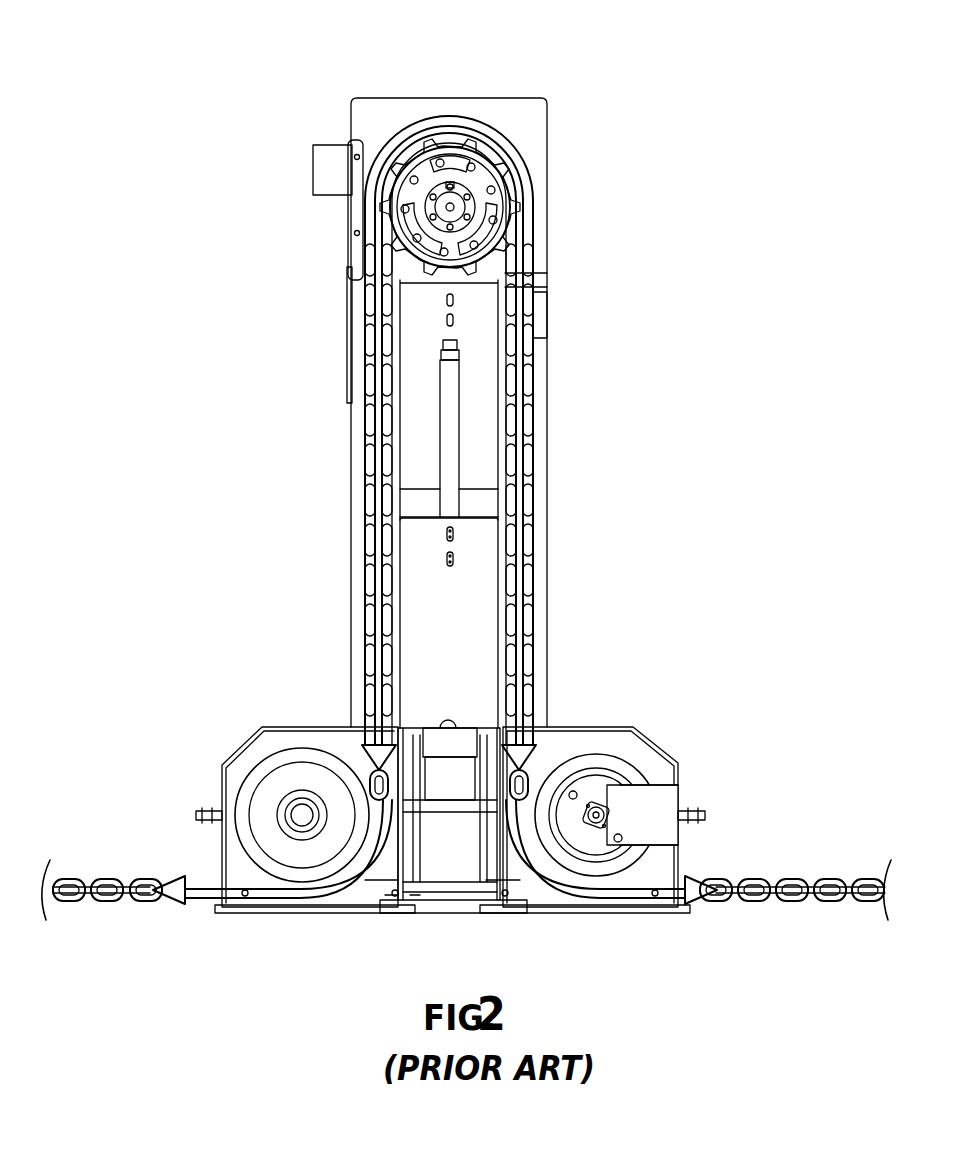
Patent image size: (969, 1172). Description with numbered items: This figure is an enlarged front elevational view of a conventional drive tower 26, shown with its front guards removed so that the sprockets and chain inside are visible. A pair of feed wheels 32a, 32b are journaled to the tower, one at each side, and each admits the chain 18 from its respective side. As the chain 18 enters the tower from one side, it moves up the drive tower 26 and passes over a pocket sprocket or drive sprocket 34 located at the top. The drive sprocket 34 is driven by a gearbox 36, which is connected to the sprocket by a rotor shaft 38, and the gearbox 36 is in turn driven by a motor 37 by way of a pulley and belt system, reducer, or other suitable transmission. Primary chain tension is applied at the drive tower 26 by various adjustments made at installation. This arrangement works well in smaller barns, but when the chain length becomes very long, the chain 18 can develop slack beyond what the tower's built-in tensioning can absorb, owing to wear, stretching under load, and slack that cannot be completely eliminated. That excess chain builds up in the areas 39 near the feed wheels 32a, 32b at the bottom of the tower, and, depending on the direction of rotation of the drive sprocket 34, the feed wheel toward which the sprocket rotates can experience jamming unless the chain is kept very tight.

The chain 18 is at (755, 878).
The drive tower 26 is at (547, 358).
The feed wheel 32a is at (280, 787).
The feed wheel 32b is at (640, 770).
The drive sprocket 34 is at (526, 170).
The gearbox 36 is at (533, 140).
The motor 37 is at (323, 170).
The rotor shaft 38 is at (452, 208).
The area 39 is at (376, 891).